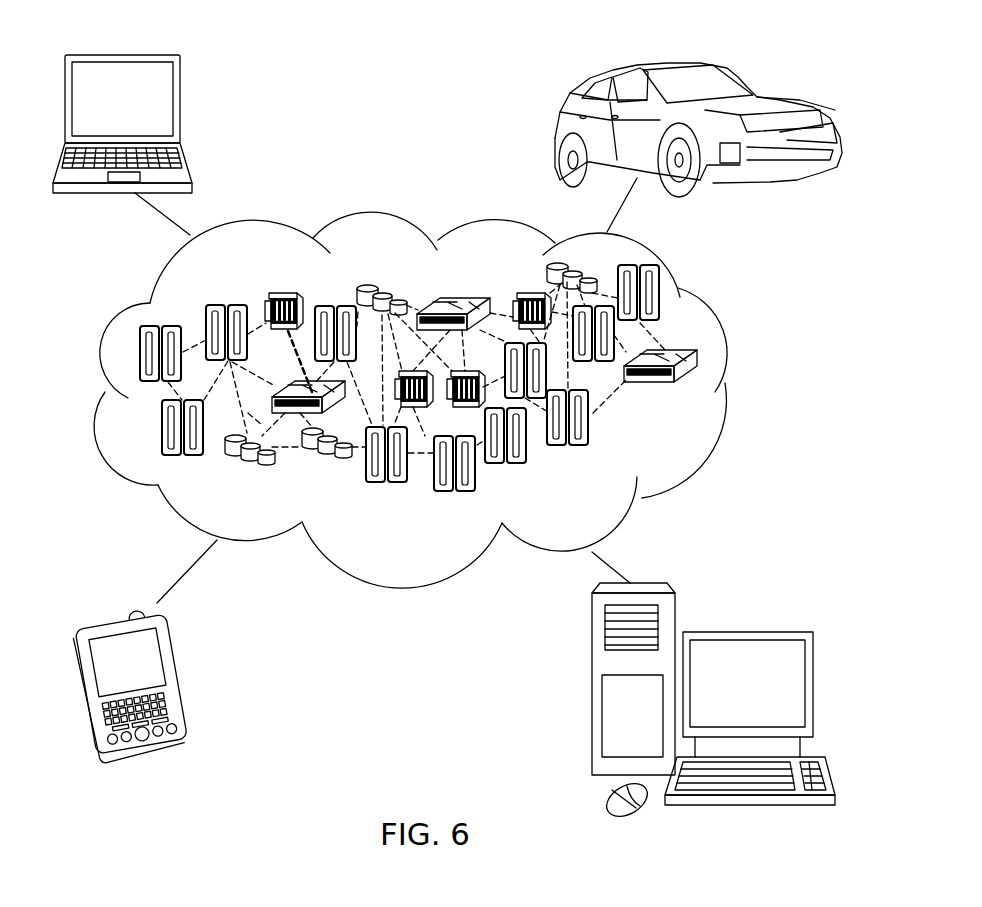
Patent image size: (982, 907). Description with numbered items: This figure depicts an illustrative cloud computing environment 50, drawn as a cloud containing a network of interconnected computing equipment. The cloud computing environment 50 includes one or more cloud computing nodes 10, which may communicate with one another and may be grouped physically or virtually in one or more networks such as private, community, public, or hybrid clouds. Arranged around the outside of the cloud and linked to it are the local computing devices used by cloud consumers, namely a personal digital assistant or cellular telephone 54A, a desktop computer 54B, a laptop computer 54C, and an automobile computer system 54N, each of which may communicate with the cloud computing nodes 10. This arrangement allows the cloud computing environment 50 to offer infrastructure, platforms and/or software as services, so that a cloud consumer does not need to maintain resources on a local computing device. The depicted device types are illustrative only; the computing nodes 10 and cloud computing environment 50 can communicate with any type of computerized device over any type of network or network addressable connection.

The cloud computing node 10 is at (436, 400).
The cloud computing environment 50 is at (730, 328).
The personal digital assistant or cellular telephone 54A is at (187, 680).
The desktop computer 54B is at (743, 632).
The laptop computer 54C is at (182, 105).
The automobile computer system 54N is at (557, 120).